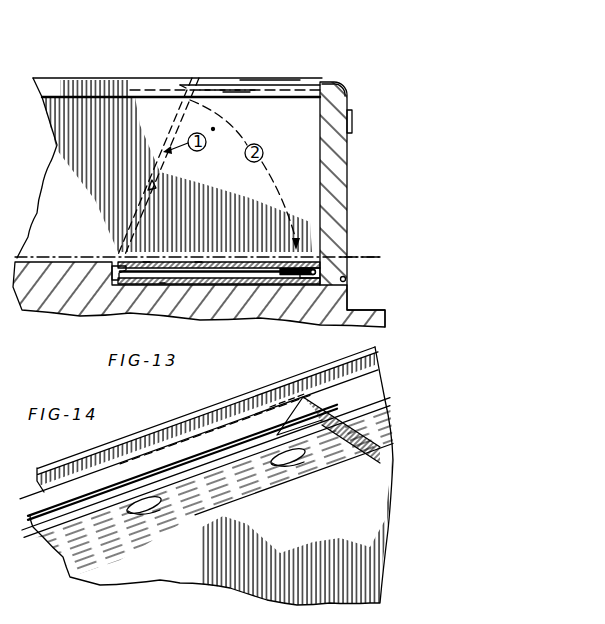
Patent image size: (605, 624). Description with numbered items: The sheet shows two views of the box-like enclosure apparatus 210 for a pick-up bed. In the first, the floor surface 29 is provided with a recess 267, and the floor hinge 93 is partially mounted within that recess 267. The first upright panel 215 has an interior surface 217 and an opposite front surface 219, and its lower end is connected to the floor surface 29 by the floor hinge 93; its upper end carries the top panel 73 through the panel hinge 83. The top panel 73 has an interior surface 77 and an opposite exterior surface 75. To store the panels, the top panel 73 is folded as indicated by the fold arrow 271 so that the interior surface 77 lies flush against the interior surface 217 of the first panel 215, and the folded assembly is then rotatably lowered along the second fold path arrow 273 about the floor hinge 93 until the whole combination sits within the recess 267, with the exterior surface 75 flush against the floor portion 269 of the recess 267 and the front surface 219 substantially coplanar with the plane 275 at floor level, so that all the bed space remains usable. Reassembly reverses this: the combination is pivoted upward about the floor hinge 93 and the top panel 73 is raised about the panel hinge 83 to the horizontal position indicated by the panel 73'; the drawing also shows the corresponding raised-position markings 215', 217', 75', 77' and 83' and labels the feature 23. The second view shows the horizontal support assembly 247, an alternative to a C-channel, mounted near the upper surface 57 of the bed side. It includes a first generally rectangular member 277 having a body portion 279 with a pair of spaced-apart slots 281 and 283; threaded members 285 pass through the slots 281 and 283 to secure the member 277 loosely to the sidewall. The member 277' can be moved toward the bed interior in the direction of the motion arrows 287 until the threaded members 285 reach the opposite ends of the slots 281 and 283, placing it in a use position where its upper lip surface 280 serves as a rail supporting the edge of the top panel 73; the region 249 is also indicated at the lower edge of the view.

In FIG. 13, the housing 23 is at (9, 69).
In FIG. 13, the floor surface 29 is at (72, 260).
In FIG. 14, the upper surface of right side 57 is at (37, 467).
In FIG. 13, the top panel 73 is at (219, 288).
In FIG. 13, the top panel in raised position 73' is at (270, 65).
In FIG. 13, the exterior surface of top panel 75 is at (219, 296).
In FIG. 13, the lower plate (alternate) 75' is at (230, 71).
In FIG. 13, the interior surface of top panel 77 is at (210, 250).
In FIG. 13, the rod (alternate) 77' is at (270, 109).
In FIG. 13, the panel hinge 83 is at (345, 282).
In FIG. 13, the pivot pin (alternate) 83' is at (175, 69).
In FIG. 13, the floor hinge 93 is at (199, 294).
In FIG. 13, the box-like enclosure apparatus 210 is at (299, 66).
In FIG. 13, the first upright panel 215 is at (201, 245).
In FIG. 13, the arm (raised position) 215' is at (177, 166).
In FIG. 13, the interior surface of first panel 217 is at (180, 298).
In FIG. 13, the arm end (raised position) 217' is at (168, 167).
In FIG. 13, the front surface of first panel 219 is at (146, 261).
In FIG. 13, the recess 267 is at (152, 288).
In FIG. 13, the floor portion of recess 269 is at (270, 262).
In FIG. 13, the fold arrow 271 is at (213, 128).
In FIG. 13, the second fold path arrow 273 is at (272, 188).
In FIG. 13, the plane at floor level 275 is at (365, 255).
In FIG. 14, the first rectangular member 277 is at (121, 547).
In FIG. 14, the rectangular member in use position 277' is at (215, 421).
In FIG. 14, the body portion 279 is at (228, 492).
In FIG. 14, the upper lip surface 280 is at (348, 413).
In FIG. 14, the slot 281 is at (153, 492).
In FIG. 14, the slot 283 is at (272, 458).
In FIG. 14, the threaded members 285 is at (158, 530).
In FIG. 14, the motion arrows 287 is at (66, 470).
In FIG. 14, the horizontal support assembly 247 is at (287, 590).
In FIG. 14, the base portion 249 is at (319, 616).